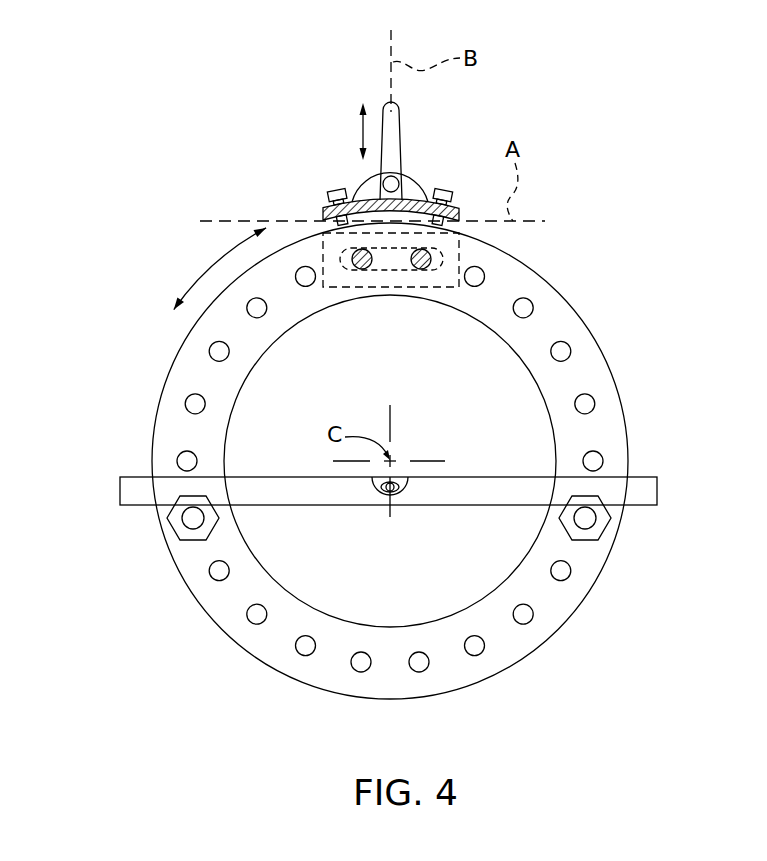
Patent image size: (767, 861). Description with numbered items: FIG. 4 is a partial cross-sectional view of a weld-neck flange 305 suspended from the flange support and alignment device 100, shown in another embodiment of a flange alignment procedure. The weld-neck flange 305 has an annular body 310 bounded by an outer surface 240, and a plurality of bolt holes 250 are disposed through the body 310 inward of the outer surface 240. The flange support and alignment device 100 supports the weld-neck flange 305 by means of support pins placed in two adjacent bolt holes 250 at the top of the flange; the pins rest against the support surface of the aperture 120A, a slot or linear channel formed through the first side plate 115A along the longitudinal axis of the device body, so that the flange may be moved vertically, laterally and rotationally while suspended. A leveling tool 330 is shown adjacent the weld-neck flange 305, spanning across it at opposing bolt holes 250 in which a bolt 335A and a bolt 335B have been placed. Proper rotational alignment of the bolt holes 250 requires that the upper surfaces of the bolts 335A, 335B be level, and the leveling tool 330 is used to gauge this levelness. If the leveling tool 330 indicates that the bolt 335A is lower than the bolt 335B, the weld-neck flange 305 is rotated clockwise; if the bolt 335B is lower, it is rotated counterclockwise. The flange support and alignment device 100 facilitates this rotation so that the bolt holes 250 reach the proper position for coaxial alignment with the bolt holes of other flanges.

The flange support and alignment device 100 is at (398, 233).
The first side plate 115A is at (456, 296).
The aperture 120A is at (400, 271).
The bolt holes 250 is at (562, 352).
The leveling tool 330 is at (645, 477).
The bolt 335A is at (193, 518).
The bolt 335B is at (585, 518).
The body 310 is at (215, 600).
The weld-neck flange 305 is at (432, 484).
The outer surface 240 is at (465, 690).